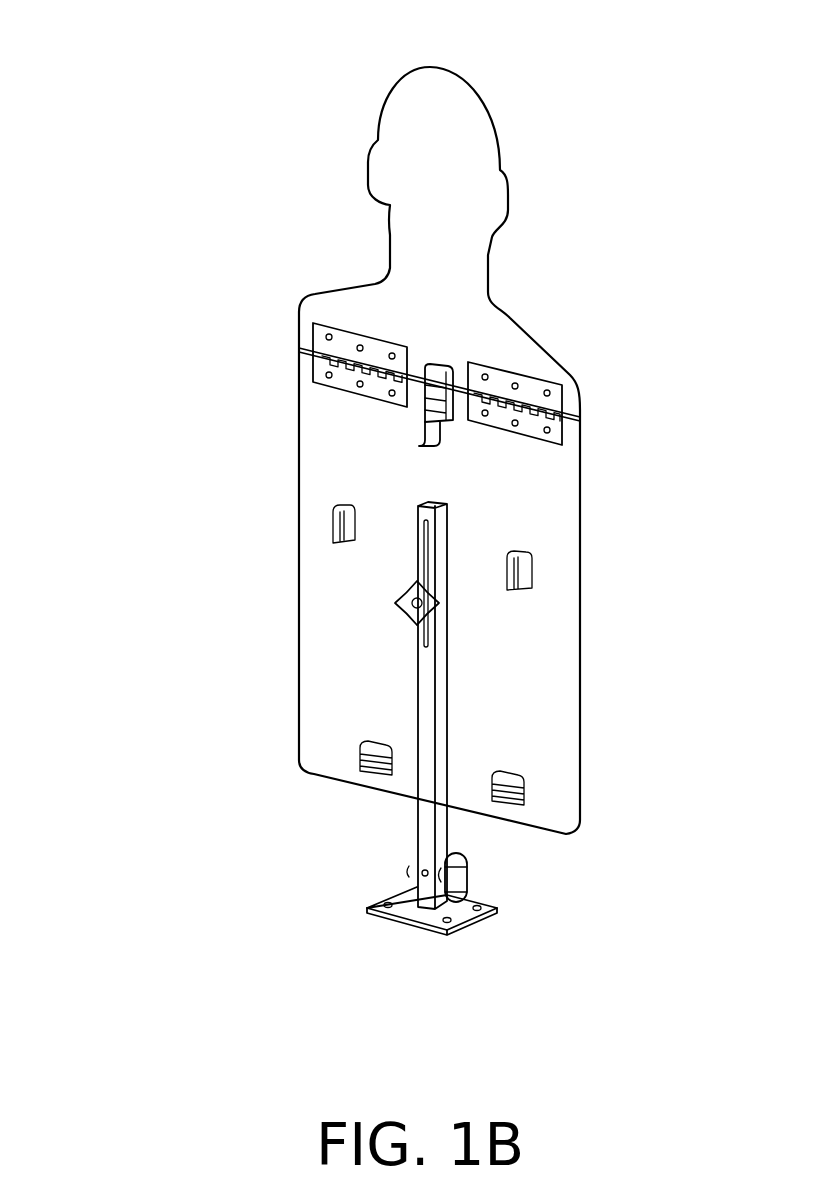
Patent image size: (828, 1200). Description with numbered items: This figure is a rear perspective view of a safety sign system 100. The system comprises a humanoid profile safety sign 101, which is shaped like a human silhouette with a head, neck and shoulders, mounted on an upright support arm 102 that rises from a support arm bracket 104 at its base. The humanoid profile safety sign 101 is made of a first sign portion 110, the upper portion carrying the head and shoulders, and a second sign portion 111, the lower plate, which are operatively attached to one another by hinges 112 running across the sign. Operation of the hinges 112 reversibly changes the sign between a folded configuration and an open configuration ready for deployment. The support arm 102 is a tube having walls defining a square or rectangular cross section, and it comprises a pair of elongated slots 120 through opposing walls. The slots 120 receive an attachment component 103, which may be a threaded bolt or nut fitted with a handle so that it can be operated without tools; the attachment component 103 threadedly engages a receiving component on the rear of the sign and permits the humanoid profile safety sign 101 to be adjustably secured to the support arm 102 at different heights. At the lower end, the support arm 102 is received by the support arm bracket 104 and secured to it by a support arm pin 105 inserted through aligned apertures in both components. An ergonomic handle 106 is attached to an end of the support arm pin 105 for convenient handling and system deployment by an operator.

The safety sign system 100 is at (68, 38).
The humanoid profile safety sign 101 is at (317, 287).
The first sign portion 110 is at (543, 344).
The second sign portion 111 is at (580, 555).
The hinges 112 is at (573, 406).
The elongated slots 120 is at (426, 549).
The support arm 102 is at (418, 698).
The attachment component 103 is at (407, 608).
The support arm bracket 104 is at (410, 922).
The support arm pin 105 is at (413, 870).
The ergonomic handle 106 is at (462, 883).